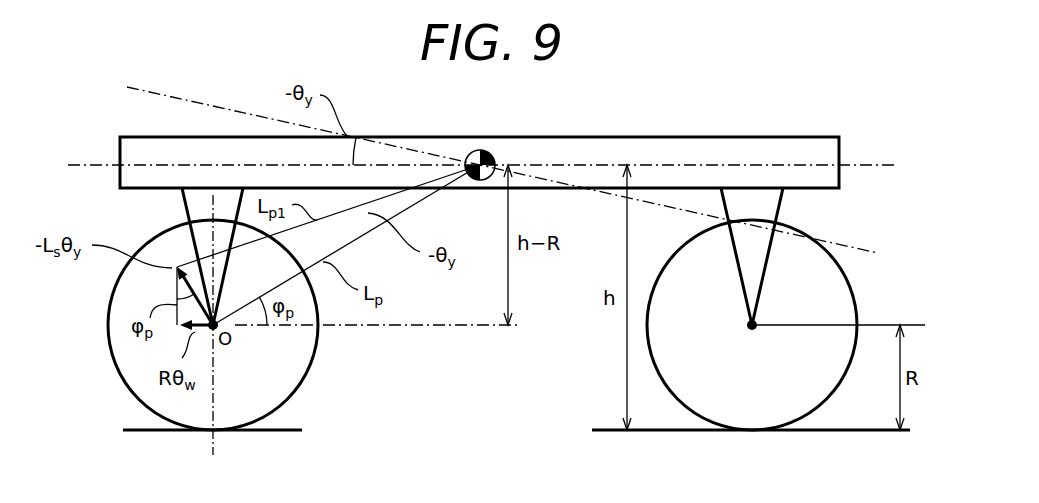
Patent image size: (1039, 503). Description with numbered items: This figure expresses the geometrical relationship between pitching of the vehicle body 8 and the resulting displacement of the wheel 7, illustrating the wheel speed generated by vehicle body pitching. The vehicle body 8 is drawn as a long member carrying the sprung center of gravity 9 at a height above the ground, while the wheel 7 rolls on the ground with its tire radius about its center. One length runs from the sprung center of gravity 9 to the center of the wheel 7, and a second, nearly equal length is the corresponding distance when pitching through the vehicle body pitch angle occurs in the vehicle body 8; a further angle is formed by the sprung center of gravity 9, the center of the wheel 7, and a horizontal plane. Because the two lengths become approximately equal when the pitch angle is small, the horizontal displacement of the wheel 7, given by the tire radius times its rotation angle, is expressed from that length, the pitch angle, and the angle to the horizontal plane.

The wheel 7 is at (307, 370).
The vehicle body 8 is at (665, 137).
The sprung center of gravity 9 is at (485, 152).